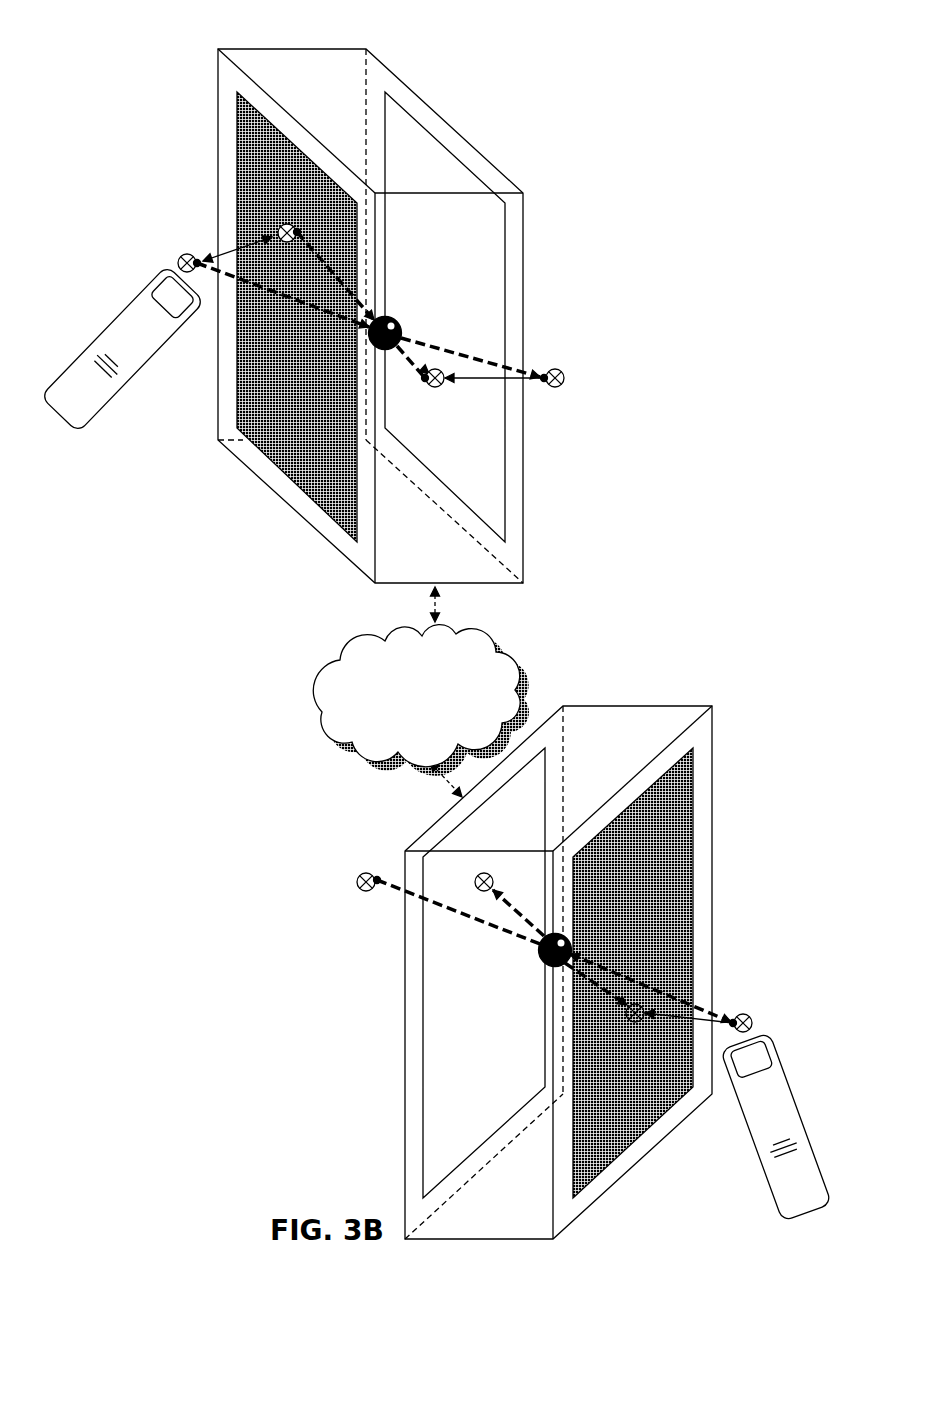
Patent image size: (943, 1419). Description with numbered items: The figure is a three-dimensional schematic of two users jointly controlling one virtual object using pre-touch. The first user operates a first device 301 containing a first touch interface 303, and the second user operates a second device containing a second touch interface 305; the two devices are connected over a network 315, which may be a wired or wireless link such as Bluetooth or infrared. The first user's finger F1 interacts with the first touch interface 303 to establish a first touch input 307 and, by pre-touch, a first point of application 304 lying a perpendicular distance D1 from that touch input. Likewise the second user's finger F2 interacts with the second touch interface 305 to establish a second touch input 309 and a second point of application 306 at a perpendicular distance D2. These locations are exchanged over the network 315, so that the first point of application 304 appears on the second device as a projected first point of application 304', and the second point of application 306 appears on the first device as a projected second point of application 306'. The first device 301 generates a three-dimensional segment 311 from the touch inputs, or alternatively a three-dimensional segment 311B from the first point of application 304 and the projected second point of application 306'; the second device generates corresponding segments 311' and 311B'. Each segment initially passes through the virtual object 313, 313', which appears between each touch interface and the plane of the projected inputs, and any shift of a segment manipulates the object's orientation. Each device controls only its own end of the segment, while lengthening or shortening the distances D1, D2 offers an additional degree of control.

The first device 301 is at (445, 120).
The first touch interface 303 is at (282, 468).
The second touch interface 305 is at (712, 883).
The first point of application 304 is at (186, 245).
The projected first point of application 304' is at (365, 863).
The second point of application 306 is at (749, 1004).
The projected second point of application 306' is at (555, 357).
The first touch input 307 is at (285, 224).
The second touch input 309 is at (442, 368).
The three-dimensional segment 311 is at (335, 268).
The three-dimensional segment 311' is at (518, 904).
The three-dimensional segment 311B is at (283, 297).
The three-dimensional segment 311B' is at (650, 983).
The virtual object 313 is at (406, 317).
The virtual object 313' is at (533, 974).
The network 315 is at (503, 643).
The perpendicular distance D1 is at (242, 256).
The perpendicular distance D2 is at (662, 1026).
The first user's finger F1 is at (108, 313).
The second user's finger F2 is at (797, 1080).